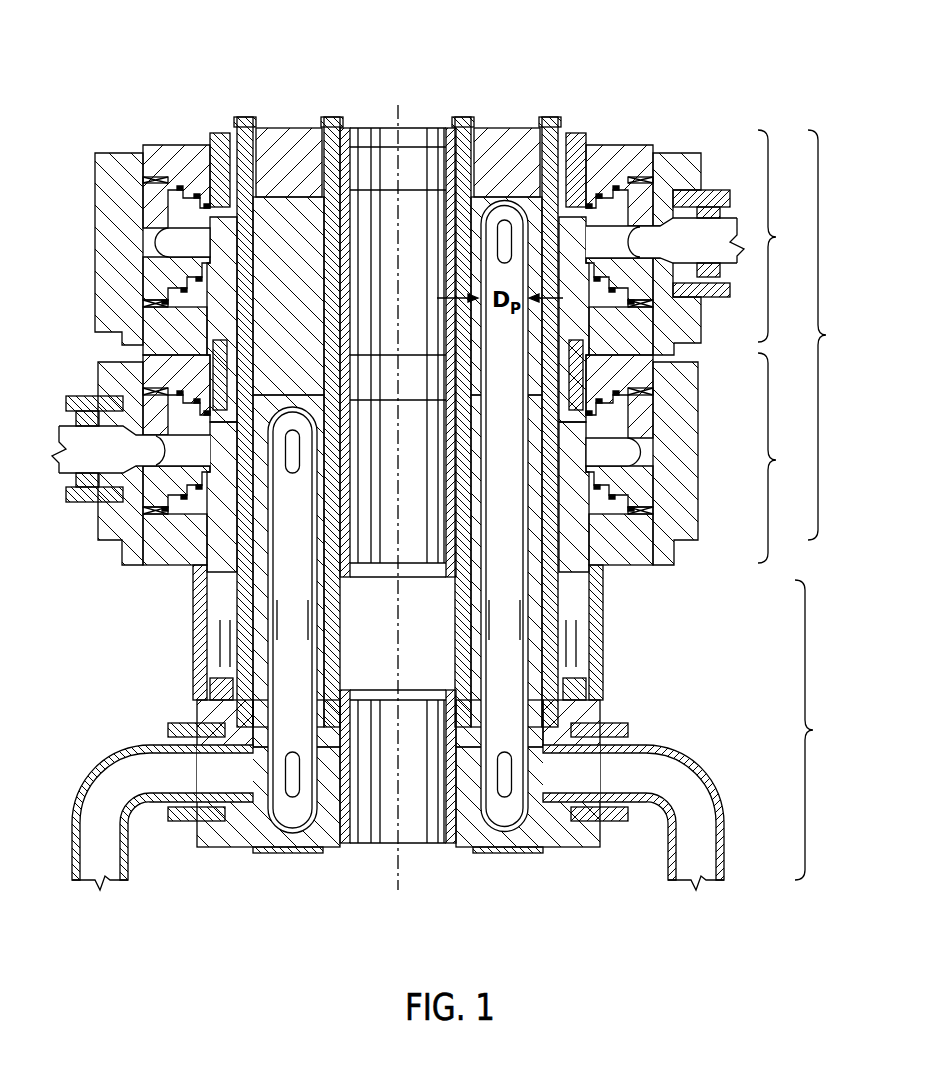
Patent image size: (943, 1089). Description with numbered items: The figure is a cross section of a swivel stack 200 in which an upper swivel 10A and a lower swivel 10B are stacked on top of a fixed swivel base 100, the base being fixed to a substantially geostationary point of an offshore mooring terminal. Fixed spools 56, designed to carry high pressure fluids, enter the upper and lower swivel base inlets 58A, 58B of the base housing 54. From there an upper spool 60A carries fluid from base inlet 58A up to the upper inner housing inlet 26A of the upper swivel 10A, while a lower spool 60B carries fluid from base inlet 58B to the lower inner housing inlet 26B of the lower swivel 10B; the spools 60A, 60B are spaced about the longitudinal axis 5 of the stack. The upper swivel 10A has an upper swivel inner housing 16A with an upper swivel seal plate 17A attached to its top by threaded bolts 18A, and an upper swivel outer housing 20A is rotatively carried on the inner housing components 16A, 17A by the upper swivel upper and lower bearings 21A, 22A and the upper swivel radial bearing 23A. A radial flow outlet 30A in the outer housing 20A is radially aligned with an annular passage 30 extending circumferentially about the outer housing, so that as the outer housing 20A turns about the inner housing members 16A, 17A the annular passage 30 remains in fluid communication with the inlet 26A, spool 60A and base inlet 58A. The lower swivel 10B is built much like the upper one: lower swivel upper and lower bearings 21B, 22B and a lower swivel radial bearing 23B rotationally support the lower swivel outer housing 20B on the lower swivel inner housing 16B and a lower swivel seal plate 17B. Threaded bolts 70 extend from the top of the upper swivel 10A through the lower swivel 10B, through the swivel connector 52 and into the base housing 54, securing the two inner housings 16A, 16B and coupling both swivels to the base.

The longitudinal axis 5 is at (415, 155).
The threaded bolts 70 is at (328, 116).
The upper inner housing inlet 26A is at (505, 198).
The lower inner housing inlet 26B is at (225, 452).
The threaded bolts 18A is at (220, 132).
The upper swivel seal plate 17A is at (160, 180).
The upper swivel upper bearing 21A is at (150, 170).
The upper swivel outer housing 20A is at (125, 165).
The annular passage 30 is at (162, 242).
The radial flow outlet 30A is at (722, 252).
The upper swivel inner housing 16A is at (215, 225).
The upper swivel lower bearing 22A is at (165, 290).
The upper swivel radial bearing 23A is at (104, 310).
The upper swivel 10A is at (788, 236).
The lower swivel 10B is at (788, 458).
The swivel stack 200 is at (836, 335).
The swivel base 100 is at (825, 730).
The lower swivel seal plate 17B is at (645, 395).
The lower swivel upper bearing 21B is at (160, 553).
The lower swivel outer housing 20B is at (670, 450).
The lower swivel lower bearing 22B is at (658, 512).
The lower swivel radial bearing 23B is at (140, 542).
The lower swivel inner housing 16B is at (620, 573).
The swivel connector 52 is at (620, 607).
The upper spool 60A is at (510, 623).
The lower spool 60B is at (283, 660).
The base housing 54 is at (620, 712).
The fixed spools 56 is at (170, 740).
The upper swivel base inlet 58A is at (620, 772).
The lower swivel base inlet 58B is at (222, 773).